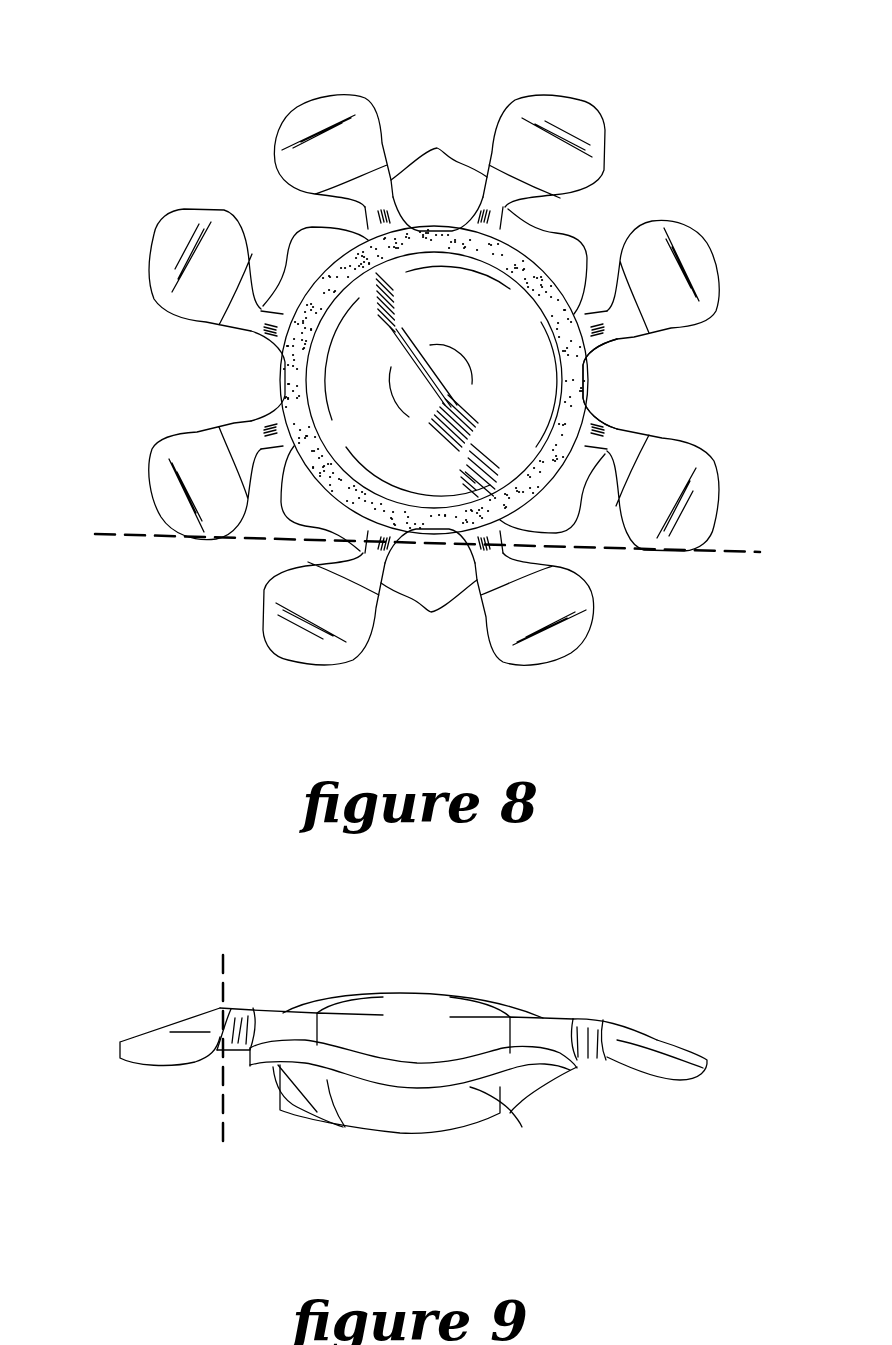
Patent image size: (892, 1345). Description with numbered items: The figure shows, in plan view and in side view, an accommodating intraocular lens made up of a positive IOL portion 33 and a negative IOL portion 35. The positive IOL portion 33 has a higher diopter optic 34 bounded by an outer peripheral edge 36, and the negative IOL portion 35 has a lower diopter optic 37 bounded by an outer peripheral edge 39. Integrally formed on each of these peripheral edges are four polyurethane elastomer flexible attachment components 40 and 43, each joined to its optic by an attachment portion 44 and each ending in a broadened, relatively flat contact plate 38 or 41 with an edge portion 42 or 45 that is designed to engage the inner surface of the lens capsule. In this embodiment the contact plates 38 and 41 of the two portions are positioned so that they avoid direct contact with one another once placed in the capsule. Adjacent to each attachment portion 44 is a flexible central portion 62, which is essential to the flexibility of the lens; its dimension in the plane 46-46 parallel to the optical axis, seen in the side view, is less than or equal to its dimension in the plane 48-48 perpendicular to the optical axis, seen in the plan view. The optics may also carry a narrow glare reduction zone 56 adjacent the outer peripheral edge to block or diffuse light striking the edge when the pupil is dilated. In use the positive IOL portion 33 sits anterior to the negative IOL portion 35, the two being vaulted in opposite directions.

In FIG. 8, the positive IOL portion 33 is at (588, 373).
In FIG. 9, the positive IOL portion 33 is at (418, 993).
In FIG. 8, the higher diopter optic 34 is at (480, 331).
In FIG. 9, the higher diopter optic 34 is at (487, 997).
In FIG. 9, the negative IOL portion 35 is at (407, 1135).
In FIG. 8, the outer peripheral edge 36 is at (597, 366).
In FIG. 9, the outer peripheral edge 36 is at (543, 1013).
In FIG. 9, the lower diopter optic 37 is at (503, 1118).
In FIG. 8, the contact plate 38 is at (313, 104).
In FIG. 9, the contact plate 38 is at (677, 1040).
In FIG. 9, the outer peripheral edge 39 is at (537, 1072).
In FIG. 8, the flexible attachment component 40 is at (377, 112).
In FIG. 9, the flexible attachment component 40 is at (670, 1070).
In FIG. 8, the contact plate 41 is at (160, 240).
In FIG. 9, the contact plate 41 is at (580, 1073).
In FIG. 9, the edge portion 42 is at (167, 1062).
In FIG. 8, the flexible attachment component 43 is at (720, 300).
In FIG. 9, the flexible attachment component 43 is at (583, 1020).
In FIG. 8, the attachment portion 44 is at (302, 228).
In FIG. 9, the edge portion 45 is at (263, 1067).
In FIG. 9, the plane 46- 46 is at (222, 1050).
In FIG. 8, the plane 48- 48 is at (426, 543).
In FIG. 8, the glare reduction zone 56 is at (569, 234).
In FIG. 8, the flexible central portion 62 is at (437, 147).
In FIG. 9, the flexible central portion 62 is at (253, 1010).